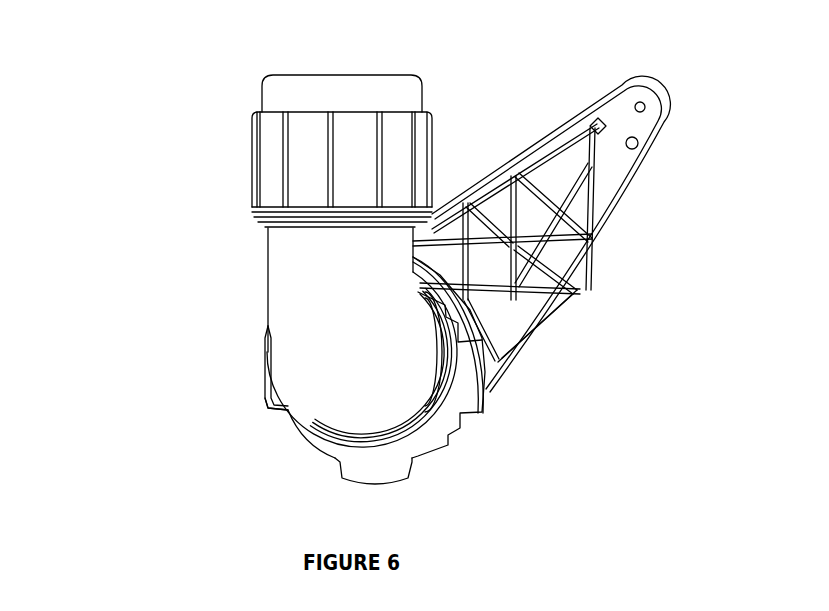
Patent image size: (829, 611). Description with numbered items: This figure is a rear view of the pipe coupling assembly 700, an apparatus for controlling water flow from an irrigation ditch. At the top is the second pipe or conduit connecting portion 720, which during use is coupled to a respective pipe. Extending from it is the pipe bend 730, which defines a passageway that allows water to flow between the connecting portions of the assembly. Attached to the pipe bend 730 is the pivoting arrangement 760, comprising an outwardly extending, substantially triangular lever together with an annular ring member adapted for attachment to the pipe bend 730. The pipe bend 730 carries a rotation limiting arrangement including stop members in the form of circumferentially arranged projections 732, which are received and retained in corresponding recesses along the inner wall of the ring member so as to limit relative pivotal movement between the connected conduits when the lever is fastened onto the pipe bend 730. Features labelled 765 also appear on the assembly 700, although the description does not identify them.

The pipe coupling assembly 700 is at (554, 329).
The second pipe or conduit connecting portion 720 is at (256, 112).
The pipe bend 730 is at (282, 300).
The projections 732 is at (276, 370).
The pivoting arrangement 760 is at (584, 104).
The tab 765 is at (266, 400).